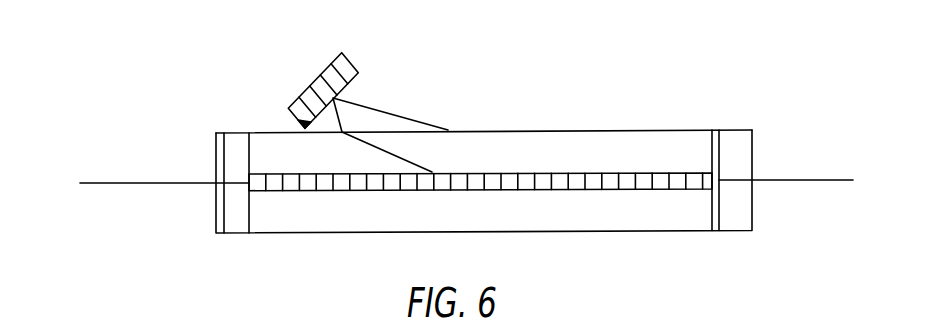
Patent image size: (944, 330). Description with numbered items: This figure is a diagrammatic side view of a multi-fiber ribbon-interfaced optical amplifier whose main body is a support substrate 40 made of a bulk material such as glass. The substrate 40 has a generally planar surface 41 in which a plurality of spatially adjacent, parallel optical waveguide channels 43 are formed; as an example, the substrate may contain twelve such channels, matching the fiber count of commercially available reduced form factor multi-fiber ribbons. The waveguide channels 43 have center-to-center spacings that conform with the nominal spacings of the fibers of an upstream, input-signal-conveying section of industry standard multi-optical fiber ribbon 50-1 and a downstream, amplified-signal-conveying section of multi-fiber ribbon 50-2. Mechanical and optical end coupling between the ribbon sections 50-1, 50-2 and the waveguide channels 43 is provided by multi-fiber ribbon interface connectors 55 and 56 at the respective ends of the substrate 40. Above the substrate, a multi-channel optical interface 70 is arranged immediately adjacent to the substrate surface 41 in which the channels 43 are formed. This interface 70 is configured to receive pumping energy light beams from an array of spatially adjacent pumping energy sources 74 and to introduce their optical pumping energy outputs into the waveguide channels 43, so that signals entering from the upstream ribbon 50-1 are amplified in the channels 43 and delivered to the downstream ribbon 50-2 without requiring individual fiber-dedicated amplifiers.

The support substrate 40 is at (342, 233).
The planar surface 41 is at (518, 130).
The optical waveguide channels 43 is at (563, 192).
The multi-optical fiber ribbon 50-1 is at (162, 182).
The multi-fiber ribbon 50-2 is at (795, 180).
The multi-fiber ribbon interface connector 55 is at (223, 237).
The multi-fiber ribbon interface connector 56 is at (755, 140).
The multi-channel optical interface 70 is at (385, 93).
The pumping energy sources 74 is at (348, 58).